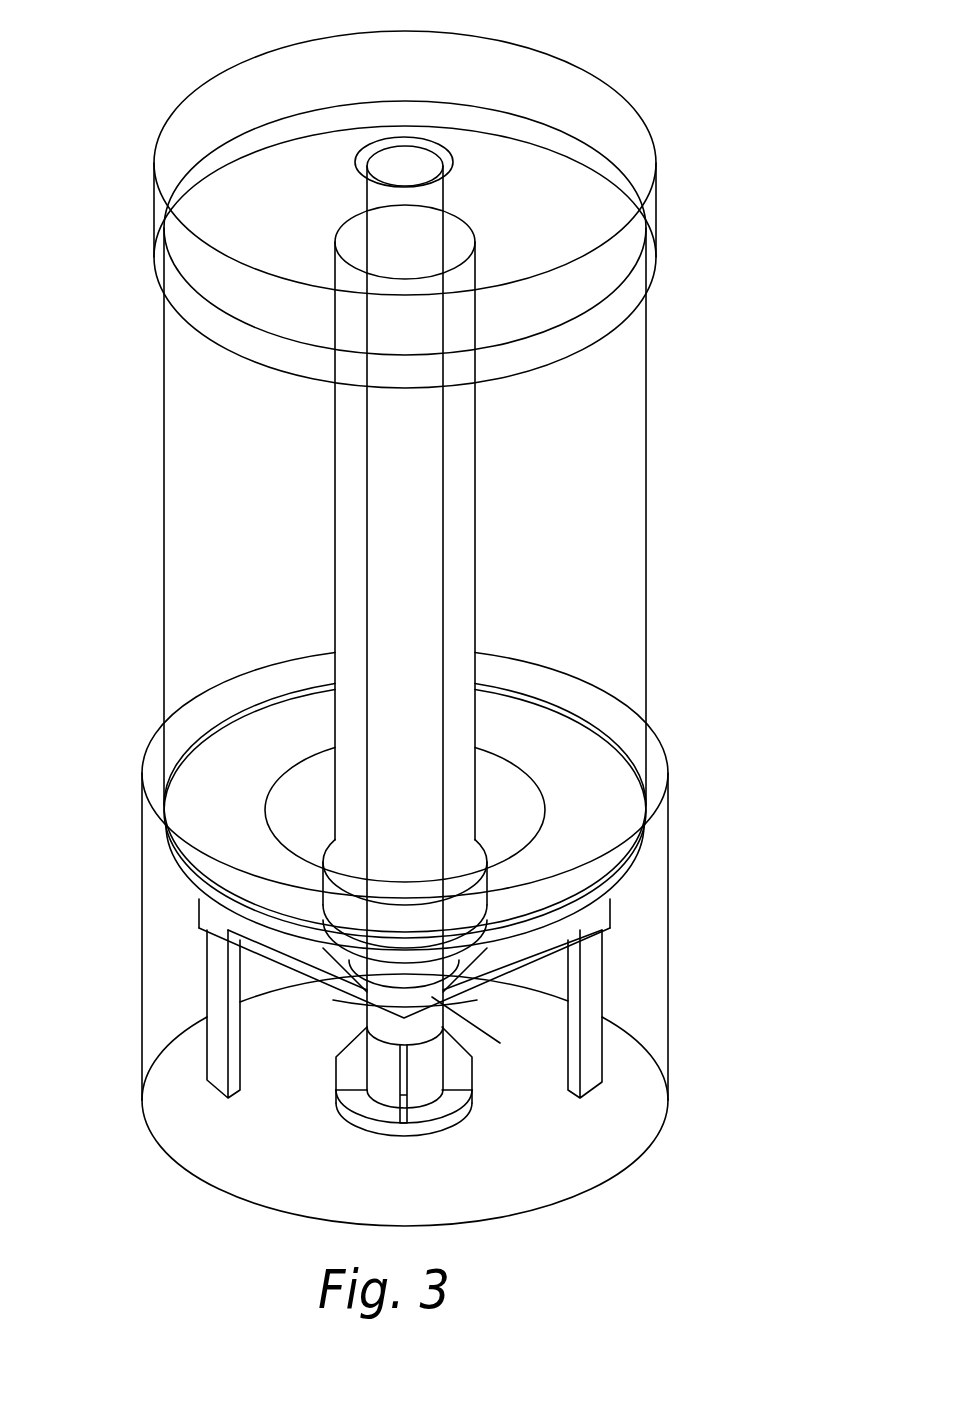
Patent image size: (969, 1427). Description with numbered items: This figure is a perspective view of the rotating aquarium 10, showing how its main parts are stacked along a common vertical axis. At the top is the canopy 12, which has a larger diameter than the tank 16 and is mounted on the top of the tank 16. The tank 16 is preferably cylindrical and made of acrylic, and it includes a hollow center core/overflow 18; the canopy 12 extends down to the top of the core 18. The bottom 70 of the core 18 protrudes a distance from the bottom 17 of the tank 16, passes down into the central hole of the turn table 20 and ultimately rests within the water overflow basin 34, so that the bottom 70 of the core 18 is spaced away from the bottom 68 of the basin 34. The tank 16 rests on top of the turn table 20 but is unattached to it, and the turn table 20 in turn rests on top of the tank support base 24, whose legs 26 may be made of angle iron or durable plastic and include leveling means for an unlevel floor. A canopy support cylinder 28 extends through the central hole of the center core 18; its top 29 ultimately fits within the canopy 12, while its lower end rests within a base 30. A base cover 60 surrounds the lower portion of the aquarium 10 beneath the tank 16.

The aquarium 10 is at (668, 105).
The canopy 12 is at (154, 161).
The tank 16 is at (164, 550).
The bottom of tank 17 is at (640, 808).
The hollow center core/overflow 18 is at (478, 491).
The turn table 20 is at (173, 867).
The tank support base 24 is at (212, 921).
The legs 26 is at (220, 1083).
The canopy support cylinder 28 is at (368, 506).
The top of support cylinder 29 is at (447, 160).
The base 30 is at (343, 1111).
The water overflow basin 34 is at (600, 812).
The base cover 60 is at (143, 1038).
The bottom of basin 68 is at (485, 1050).
The bottom of core 70 is at (600, 870).